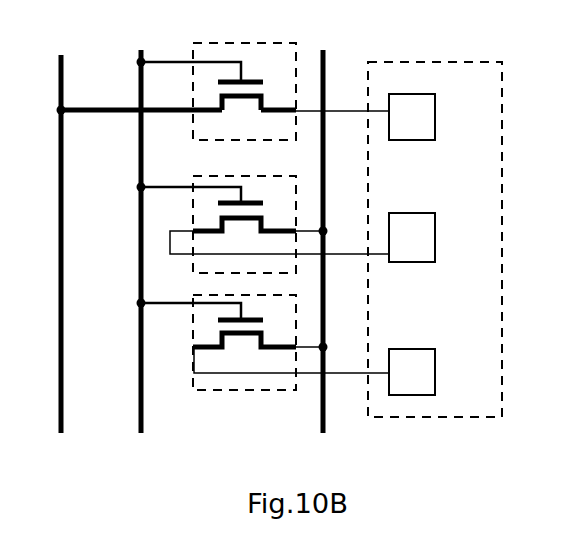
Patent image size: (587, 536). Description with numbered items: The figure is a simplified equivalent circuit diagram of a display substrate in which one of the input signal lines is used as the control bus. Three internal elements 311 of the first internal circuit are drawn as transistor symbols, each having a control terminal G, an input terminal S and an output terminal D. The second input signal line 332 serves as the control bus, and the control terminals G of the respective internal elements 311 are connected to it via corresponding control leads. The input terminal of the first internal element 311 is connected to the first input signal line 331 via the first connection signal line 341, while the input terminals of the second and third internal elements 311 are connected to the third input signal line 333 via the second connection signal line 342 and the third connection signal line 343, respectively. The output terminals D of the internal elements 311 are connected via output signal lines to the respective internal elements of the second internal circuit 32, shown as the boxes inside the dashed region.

The first input signal line 331 is at (61, 58).
The second input signal line 332 is at (141, 52).
The third input signal line 333 is at (323, 55).
The first connection signal line 341 is at (73, 110).
The second connection signal line 342 is at (302, 232).
The third connection signal line 343 is at (307, 349).
The internal element 311 is at (231, 43).
The second internal circuit 32 is at (462, 62).